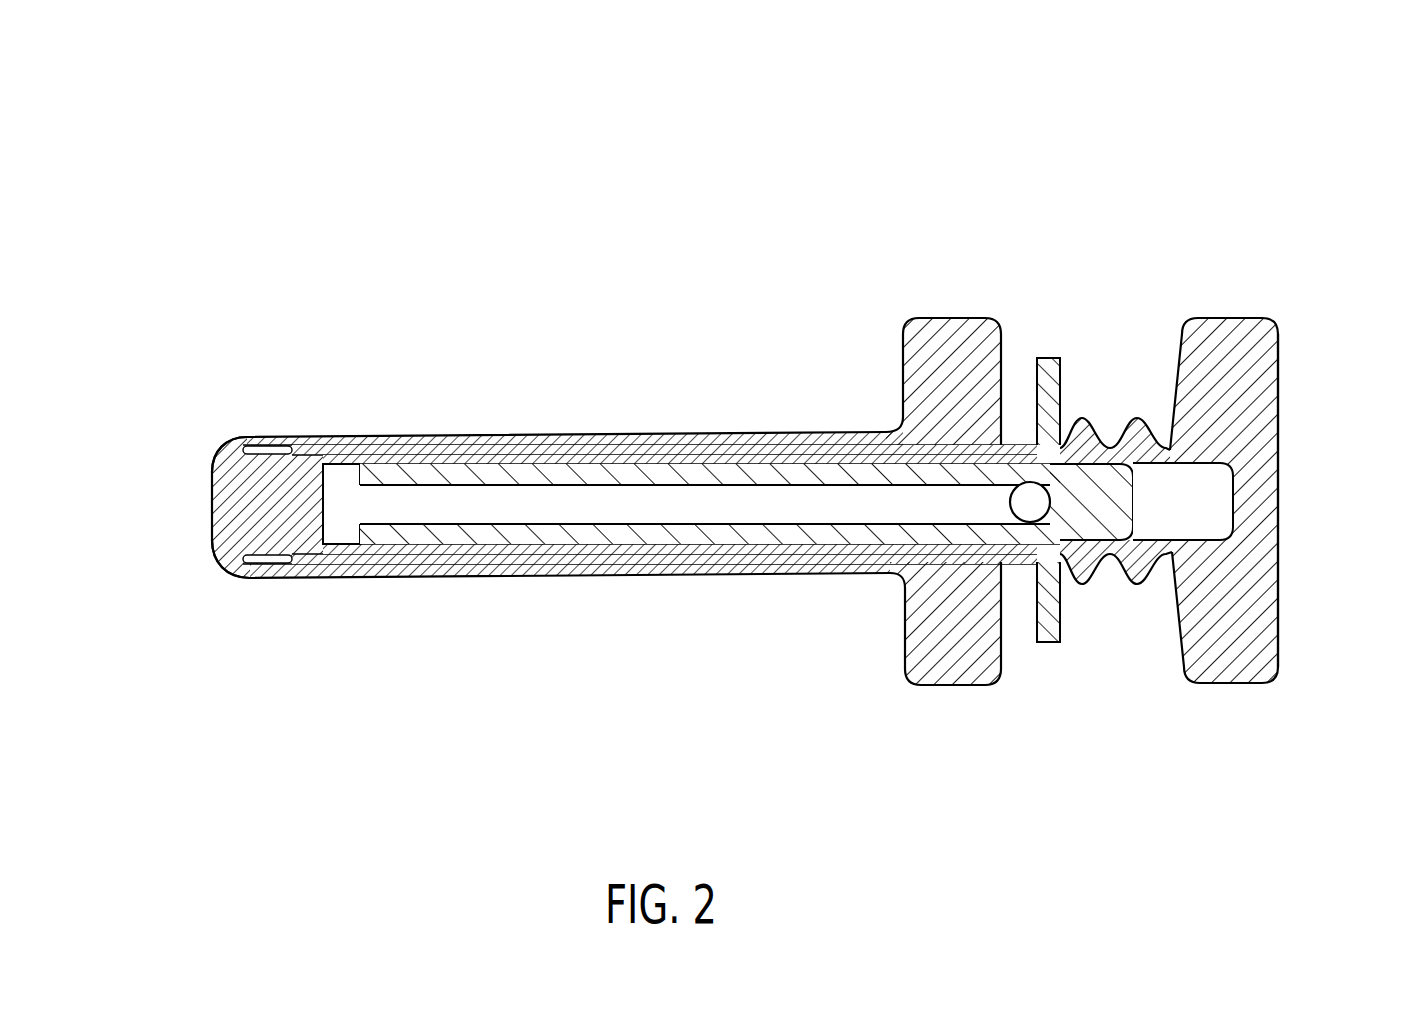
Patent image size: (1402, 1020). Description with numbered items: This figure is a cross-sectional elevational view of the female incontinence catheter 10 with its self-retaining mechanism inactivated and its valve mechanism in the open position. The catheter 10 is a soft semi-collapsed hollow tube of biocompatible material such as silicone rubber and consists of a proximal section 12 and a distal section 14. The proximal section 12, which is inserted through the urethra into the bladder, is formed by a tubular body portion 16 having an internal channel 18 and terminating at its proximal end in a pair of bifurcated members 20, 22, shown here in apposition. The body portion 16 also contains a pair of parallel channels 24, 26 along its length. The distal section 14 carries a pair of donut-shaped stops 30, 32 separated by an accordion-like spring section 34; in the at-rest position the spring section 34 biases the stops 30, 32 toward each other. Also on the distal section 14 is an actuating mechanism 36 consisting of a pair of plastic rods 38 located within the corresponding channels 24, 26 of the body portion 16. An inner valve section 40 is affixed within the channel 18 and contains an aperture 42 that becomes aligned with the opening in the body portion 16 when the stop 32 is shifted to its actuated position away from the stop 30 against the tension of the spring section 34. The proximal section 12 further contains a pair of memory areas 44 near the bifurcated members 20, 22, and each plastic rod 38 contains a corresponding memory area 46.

The female incontinence catheter 10 is at (448, 208).
The proximal section 12 is at (209, 492).
The distal section 14 is at (1277, 372).
The tubular body portion 16 is at (500, 437).
The internal channel 18 is at (765, 505).
The bifurcated member 20 is at (211, 444).
The bifurcated member 22 is at (212, 552).
The parallel channel 24 is at (255, 438).
The parallel channel 26 is at (253, 578).
The donut-shaped stop 30 is at (903, 333).
The donut-shaped stop 32 is at (1213, 317).
The accordion-like spring section 34 is at (1090, 427).
The actuating mechanism 36 is at (1058, 360).
The plastic rod 38 is at (627, 447).
The inner valve section 40 is at (767, 532).
The aperture 42 is at (1040, 512).
The memory area 44 is at (347, 470).
The memory area 46 is at (395, 452).